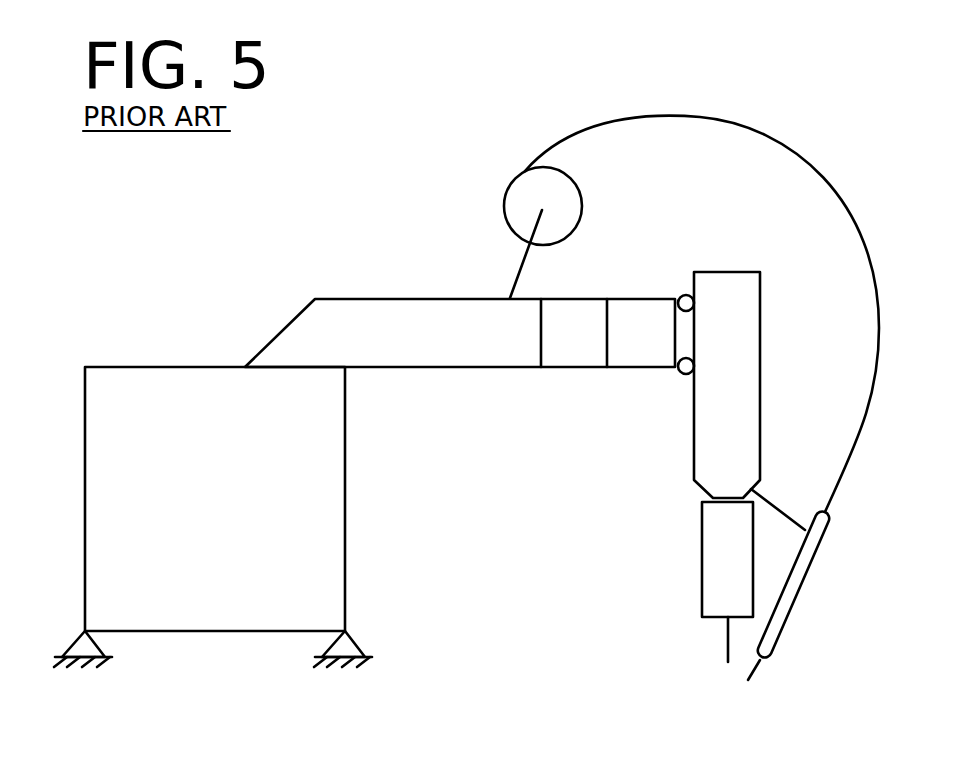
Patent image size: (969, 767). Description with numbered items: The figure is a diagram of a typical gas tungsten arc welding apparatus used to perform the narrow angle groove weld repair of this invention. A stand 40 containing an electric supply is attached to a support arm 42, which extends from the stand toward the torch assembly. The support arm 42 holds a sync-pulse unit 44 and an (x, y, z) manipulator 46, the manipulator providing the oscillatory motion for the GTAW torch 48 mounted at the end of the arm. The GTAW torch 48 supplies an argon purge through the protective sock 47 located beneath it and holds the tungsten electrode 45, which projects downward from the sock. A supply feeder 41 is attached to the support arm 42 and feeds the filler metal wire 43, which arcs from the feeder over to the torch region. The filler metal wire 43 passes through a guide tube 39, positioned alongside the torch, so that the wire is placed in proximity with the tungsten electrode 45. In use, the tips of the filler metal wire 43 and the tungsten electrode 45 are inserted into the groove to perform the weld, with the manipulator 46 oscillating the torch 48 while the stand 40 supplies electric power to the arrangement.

The guide tube 39 is at (793, 587).
The stand 40 is at (105, 426).
The supply feeder 41 is at (522, 188).
The support arm 42 is at (388, 318).
The filler metal wire 43 is at (847, 138).
The sync-pulse unit 44 is at (564, 347).
The tungsten electrode 45 is at (727, 638).
The (x, y, z) manipulator 46 is at (642, 353).
The protective sock 47 is at (718, 547).
The GTAW torch 48 is at (745, 350).